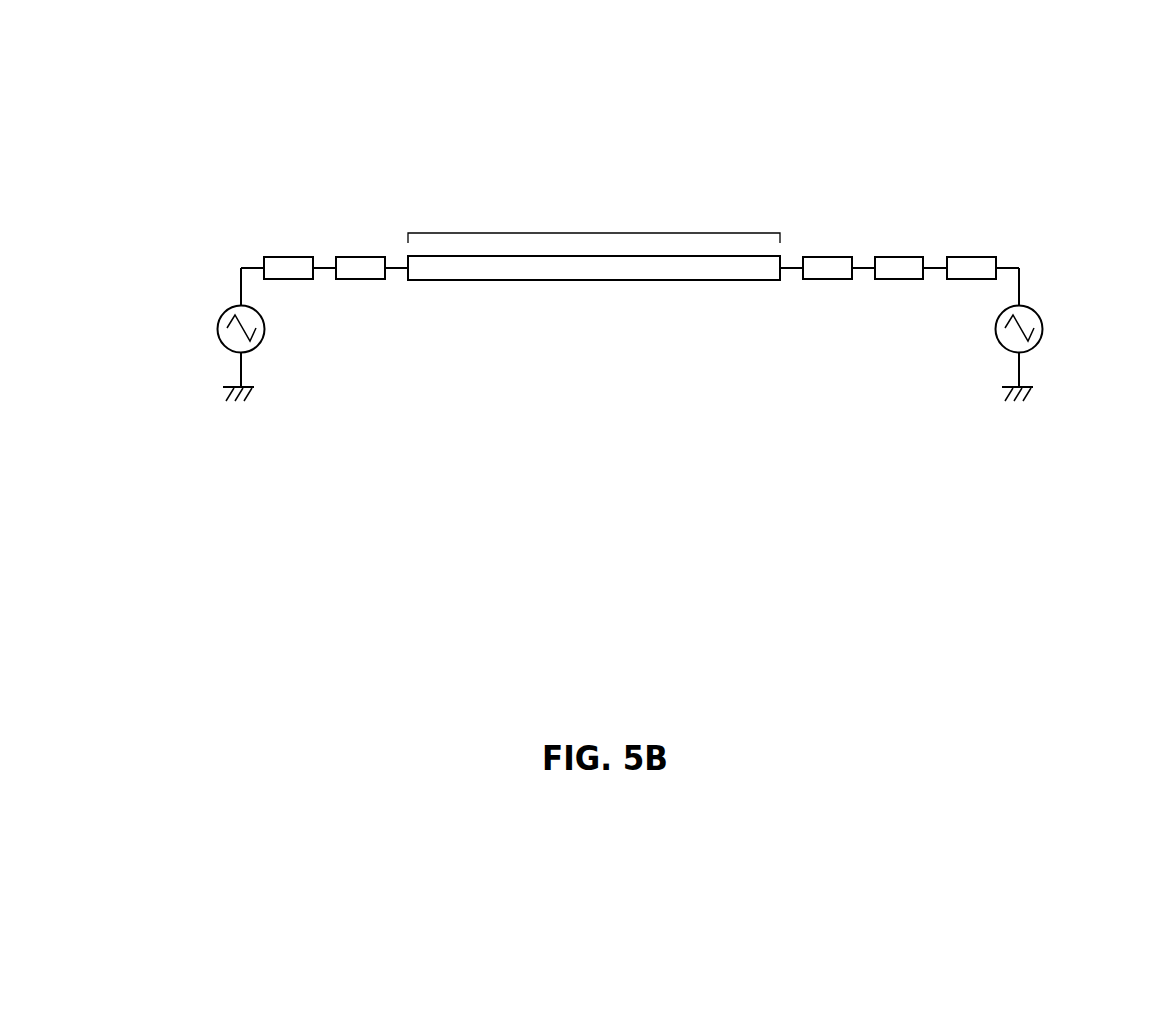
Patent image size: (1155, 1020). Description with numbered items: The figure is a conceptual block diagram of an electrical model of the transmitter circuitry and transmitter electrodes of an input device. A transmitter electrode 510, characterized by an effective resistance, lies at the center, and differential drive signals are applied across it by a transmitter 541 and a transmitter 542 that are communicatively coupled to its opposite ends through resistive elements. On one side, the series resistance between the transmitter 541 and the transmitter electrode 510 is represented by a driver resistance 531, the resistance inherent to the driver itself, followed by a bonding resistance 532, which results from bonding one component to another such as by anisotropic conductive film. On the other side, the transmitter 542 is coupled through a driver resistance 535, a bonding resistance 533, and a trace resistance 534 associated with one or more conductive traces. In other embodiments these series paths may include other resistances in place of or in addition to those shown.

The transmitter electrode 510 is at (590, 143).
The driver resistance 531 is at (283, 263).
The bonding resistance 532 is at (356, 263).
The bonding resistance 533 is at (826, 263).
The trace resistance 534 is at (897, 263).
The driver resistance 535 is at (967, 263).
The transmitter 541 is at (222, 334).
The transmitter 542 is at (1045, 337).